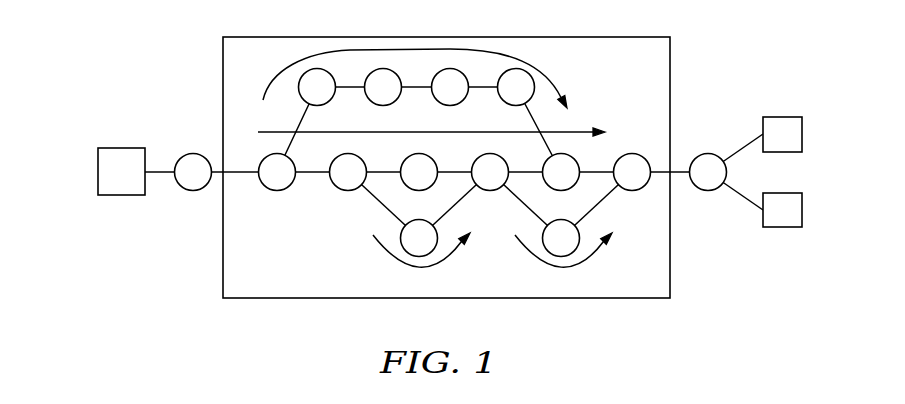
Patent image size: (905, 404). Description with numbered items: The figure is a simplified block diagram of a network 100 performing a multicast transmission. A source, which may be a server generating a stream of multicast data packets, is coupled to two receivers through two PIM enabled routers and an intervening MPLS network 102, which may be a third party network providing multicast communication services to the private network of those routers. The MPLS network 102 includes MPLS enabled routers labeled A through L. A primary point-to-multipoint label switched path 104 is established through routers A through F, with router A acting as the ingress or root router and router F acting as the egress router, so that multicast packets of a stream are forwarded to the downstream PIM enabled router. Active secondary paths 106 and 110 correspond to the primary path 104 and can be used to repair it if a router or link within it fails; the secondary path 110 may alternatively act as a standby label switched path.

The network 100 is at (784, 20).
The MPLS network 102 is at (482, 37).
The primary point-to-multipoint label switched path 104 is at (383, 132).
The secondary path 106 is at (437, 262).
The secondary path 110 is at (553, 74).